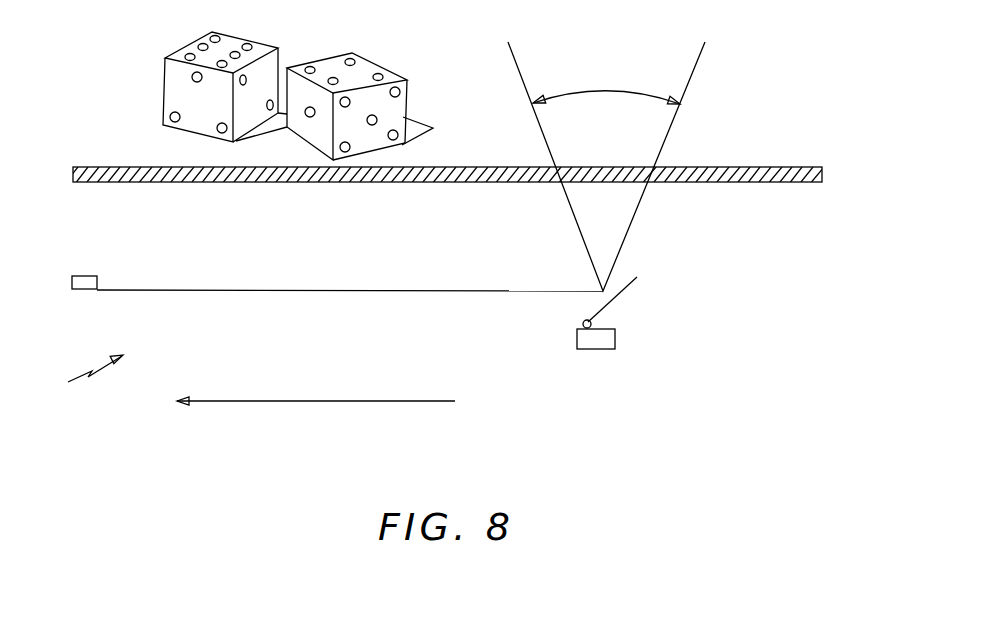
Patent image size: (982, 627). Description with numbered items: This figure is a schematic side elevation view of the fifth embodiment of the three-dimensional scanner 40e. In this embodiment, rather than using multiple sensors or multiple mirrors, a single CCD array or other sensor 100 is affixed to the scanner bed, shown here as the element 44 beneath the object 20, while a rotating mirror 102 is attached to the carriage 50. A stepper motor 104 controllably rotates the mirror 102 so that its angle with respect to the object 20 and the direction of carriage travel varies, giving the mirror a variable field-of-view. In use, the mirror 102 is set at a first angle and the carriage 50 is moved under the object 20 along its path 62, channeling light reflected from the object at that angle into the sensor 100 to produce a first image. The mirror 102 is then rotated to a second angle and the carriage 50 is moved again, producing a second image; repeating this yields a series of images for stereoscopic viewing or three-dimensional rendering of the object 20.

The object 20 is at (167, 75).
The transparent table surface 44 is at (132, 172).
The sensor 100 is at (93, 278).
The rotating mirror 102 is at (620, 308).
The stepper motor 104 is at (574, 310).
The carriage 50 is at (603, 344).
The path 62 is at (207, 401).
The 3-D scanner 40e is at (72, 384).